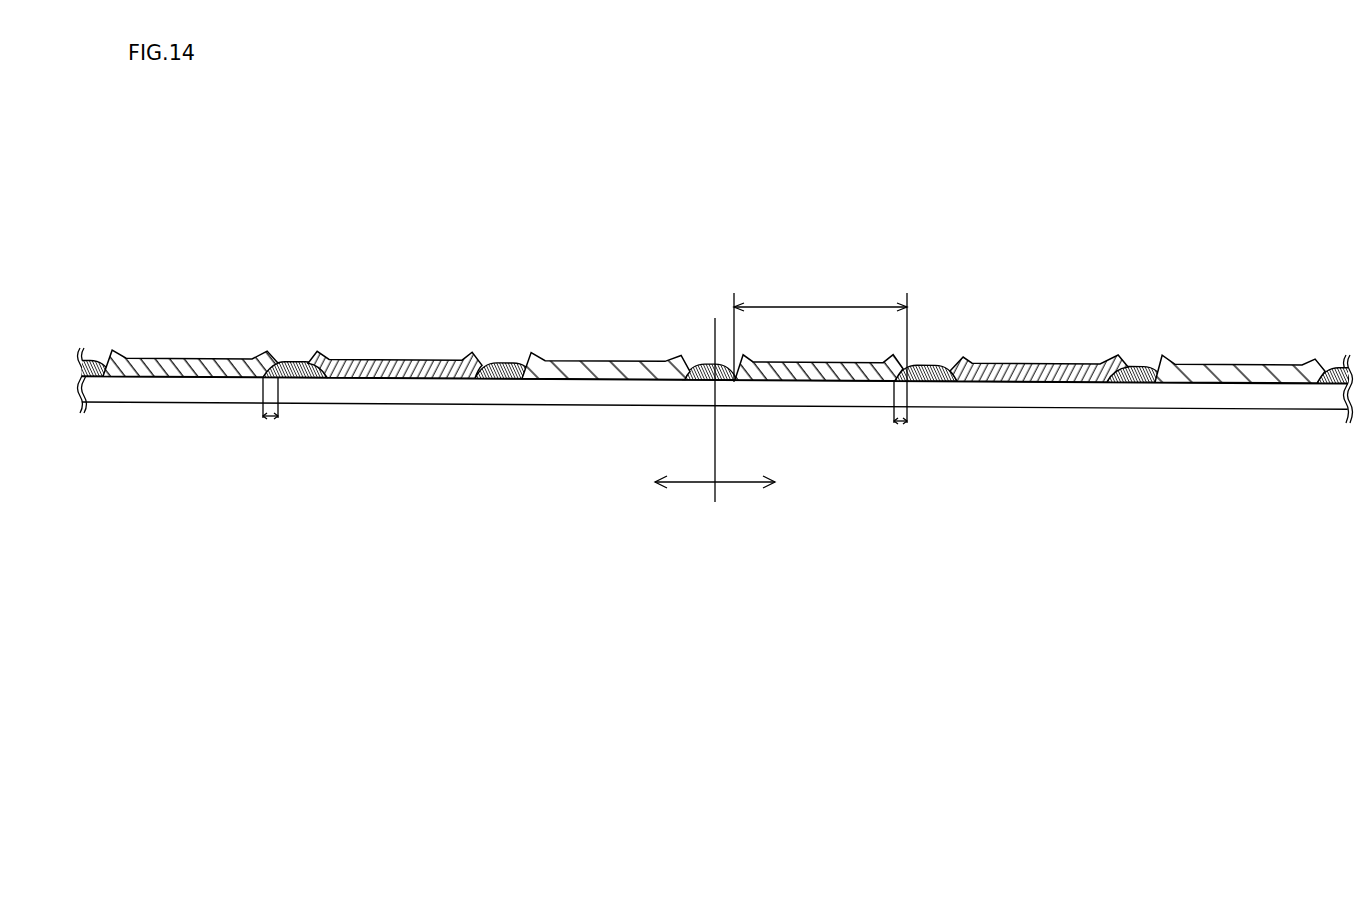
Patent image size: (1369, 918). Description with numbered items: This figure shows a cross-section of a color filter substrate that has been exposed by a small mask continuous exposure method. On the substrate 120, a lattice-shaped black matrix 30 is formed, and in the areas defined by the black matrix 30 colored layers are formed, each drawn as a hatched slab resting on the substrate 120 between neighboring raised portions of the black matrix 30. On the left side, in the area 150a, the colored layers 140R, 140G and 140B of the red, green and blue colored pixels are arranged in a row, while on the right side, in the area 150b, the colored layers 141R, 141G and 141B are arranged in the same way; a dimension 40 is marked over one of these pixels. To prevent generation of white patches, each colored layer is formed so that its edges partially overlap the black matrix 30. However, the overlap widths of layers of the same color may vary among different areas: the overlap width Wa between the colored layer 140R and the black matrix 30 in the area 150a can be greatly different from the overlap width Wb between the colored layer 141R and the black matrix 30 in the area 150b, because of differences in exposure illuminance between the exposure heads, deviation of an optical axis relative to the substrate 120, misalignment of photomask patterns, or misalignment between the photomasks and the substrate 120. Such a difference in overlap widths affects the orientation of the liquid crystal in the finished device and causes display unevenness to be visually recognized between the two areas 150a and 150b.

The colored layer 140R is at (165, 354).
The colored layer 140G is at (395, 355).
The colored layer 140B is at (600, 368).
The colored layer 141R is at (802, 367).
The colored layer 141G is at (1032, 365).
The colored layer 141B is at (1240, 377).
The black matrix 30 is at (927, 365).
The pixel width 40 is at (822, 304).
The substrate 120 is at (1032, 397).
The overlap width Wa is at (270, 420).
The overlap width Wb is at (900, 427).
The area 150a is at (658, 483).
The area 150b is at (772, 483).